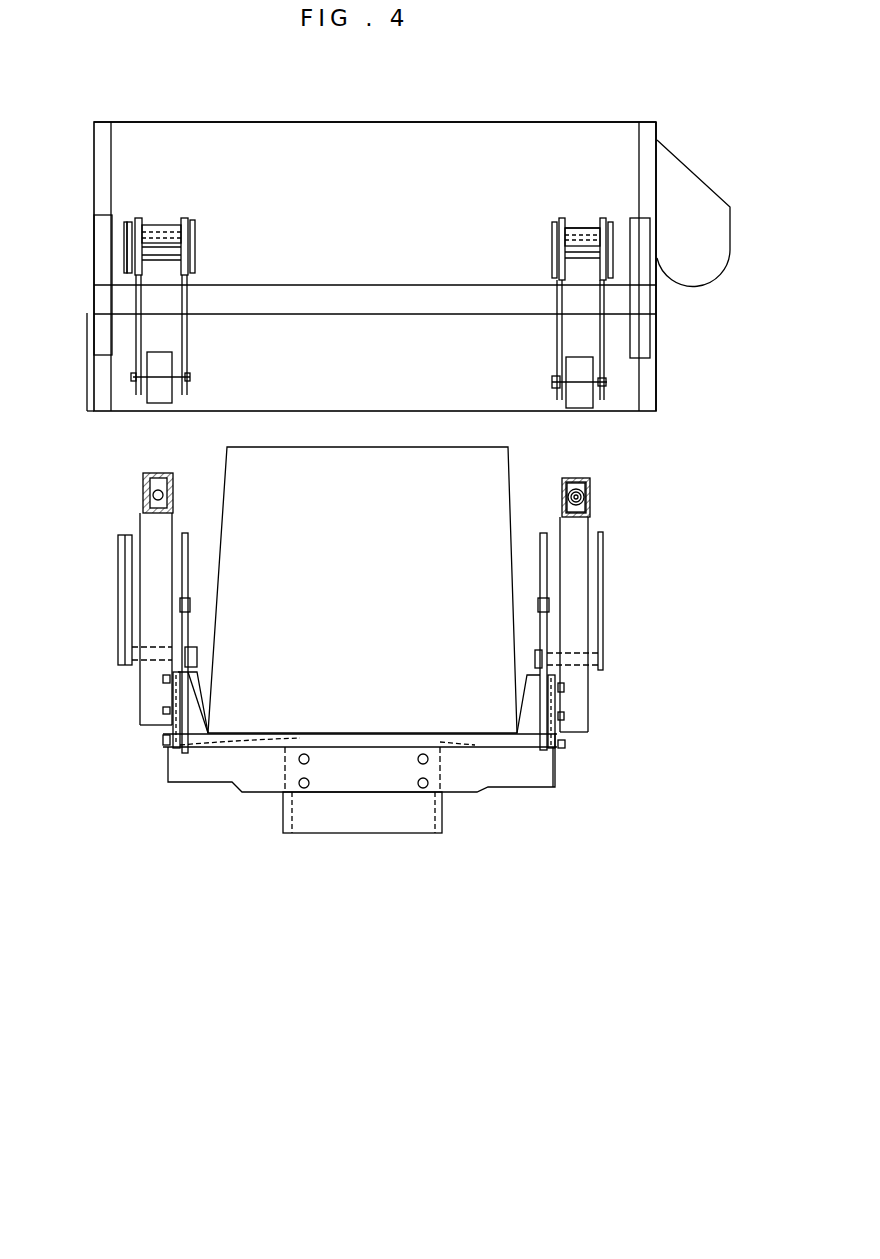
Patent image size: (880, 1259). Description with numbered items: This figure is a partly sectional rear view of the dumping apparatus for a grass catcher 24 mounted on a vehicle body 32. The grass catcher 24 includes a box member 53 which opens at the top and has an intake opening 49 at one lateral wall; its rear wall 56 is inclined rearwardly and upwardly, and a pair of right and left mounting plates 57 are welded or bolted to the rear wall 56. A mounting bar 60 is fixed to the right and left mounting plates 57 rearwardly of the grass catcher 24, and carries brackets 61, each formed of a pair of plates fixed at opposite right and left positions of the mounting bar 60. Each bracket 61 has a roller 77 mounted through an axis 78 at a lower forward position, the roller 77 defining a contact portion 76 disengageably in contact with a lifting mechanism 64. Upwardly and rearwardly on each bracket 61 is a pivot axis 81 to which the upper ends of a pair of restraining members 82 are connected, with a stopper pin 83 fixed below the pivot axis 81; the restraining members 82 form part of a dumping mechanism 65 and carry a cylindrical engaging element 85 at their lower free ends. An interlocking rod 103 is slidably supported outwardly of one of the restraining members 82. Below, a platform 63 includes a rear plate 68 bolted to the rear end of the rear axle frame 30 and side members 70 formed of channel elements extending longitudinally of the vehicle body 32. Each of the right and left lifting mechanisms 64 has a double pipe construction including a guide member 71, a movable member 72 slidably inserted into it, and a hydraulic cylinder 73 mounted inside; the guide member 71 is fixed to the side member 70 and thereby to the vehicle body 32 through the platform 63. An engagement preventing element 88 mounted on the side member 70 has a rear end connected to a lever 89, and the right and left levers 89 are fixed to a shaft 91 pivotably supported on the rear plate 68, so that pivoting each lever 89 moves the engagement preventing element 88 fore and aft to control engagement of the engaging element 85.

The grass catcher 24 is at (674, 121).
The rear axle frame 30 is at (441, 808).
The vehicle body 32 is at (350, 446).
The intake opening 49 is at (703, 188).
The box member 53 is at (580, 117).
The rear wall 56 is at (515, 128).
The mounting plates 57 is at (115, 218).
The mounting bar 60 is at (388, 296).
The brackets 61 is at (143, 340).
The platform 63 is at (562, 771).
The lifting mechanisms 64 is at (140, 507).
The dumping mechanisms 65 is at (547, 262).
The rear plate 68 is at (530, 775).
The side members 70 is at (187, 720).
The guide member 71 is at (574, 478).
The movable member 72 is at (584, 482).
The hydraulic cylinder 73 is at (594, 493).
The contact portion 76 is at (179, 402).
The roller 77 is at (570, 370).
The axis 78 is at (552, 382).
The pivot axis 81 is at (195, 235).
The restraining members 82 is at (140, 222).
The stopper pin 83 is at (175, 256).
The engaging element 85 is at (132, 658).
The engagement preventing element 88 is at (198, 651).
The lever 89 is at (190, 622).
The shaft 91 is at (273, 734).
The interlocking rod 103 is at (127, 263).